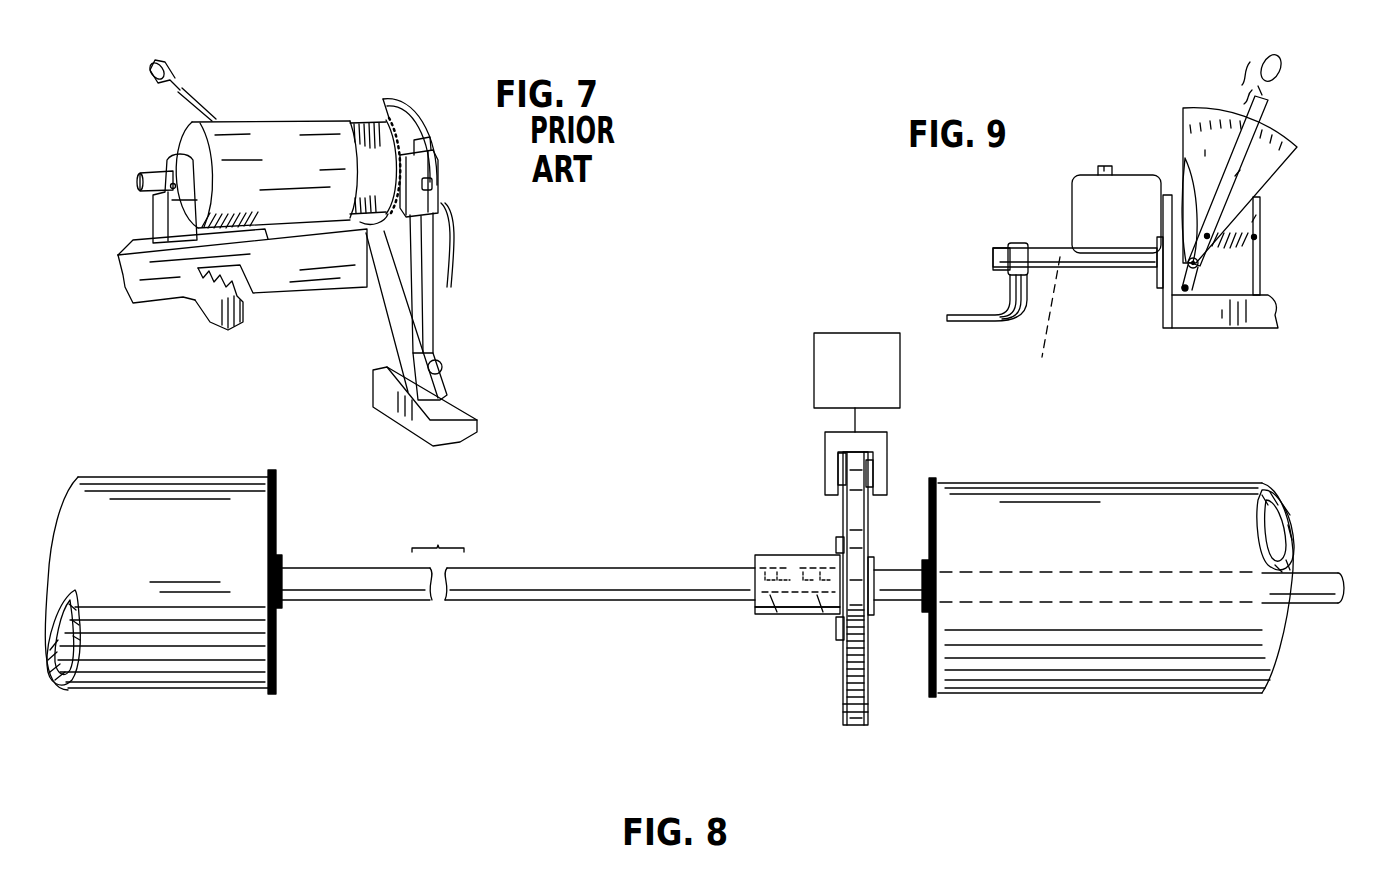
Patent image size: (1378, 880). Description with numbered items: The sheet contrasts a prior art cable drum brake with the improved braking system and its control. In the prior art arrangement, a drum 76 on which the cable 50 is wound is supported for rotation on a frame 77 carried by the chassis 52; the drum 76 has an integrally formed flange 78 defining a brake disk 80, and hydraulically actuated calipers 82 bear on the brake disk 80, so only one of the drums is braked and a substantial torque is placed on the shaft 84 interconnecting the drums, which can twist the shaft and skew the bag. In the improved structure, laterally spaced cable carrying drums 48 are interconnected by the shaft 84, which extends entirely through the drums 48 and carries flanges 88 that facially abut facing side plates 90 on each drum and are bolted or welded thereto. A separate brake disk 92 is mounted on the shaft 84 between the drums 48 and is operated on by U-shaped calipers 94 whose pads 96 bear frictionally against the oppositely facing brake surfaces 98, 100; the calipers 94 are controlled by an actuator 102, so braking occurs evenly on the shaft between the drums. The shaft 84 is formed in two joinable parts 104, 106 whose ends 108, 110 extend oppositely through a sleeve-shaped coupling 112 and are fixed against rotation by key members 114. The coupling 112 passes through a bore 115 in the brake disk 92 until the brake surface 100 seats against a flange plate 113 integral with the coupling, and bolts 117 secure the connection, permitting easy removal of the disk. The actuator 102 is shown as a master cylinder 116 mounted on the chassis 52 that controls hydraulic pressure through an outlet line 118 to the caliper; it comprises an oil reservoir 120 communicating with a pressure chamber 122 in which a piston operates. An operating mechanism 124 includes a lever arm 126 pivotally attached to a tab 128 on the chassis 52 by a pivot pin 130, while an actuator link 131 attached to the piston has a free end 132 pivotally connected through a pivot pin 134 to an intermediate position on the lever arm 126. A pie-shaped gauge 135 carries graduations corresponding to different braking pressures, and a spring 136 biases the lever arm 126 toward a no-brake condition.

In FIG. 8, the cable carrying drums 48 is at (155, 512).
In FIG. 7, the cable 50 is at (207, 118).
In FIG. 9, the chassis 52 is at (1260, 313).
In FIG. 7, the drum 76 is at (358, 140).
In FIG. 7, the frame 77 is at (345, 295).
In FIG. 7, the flange 78 is at (380, 110).
In FIG. 7, the brake disk 80 is at (403, 108).
In FIG. 7, the calipers 82 is at (352, 120).
In FIG. 7, the shaft 84 is at (147, 176).
In FIG. 8, the shaft 84 is at (548, 600).
In FIG. 8, the flanges 88 is at (280, 606).
In FIG. 8, the side plates 90 is at (272, 670).
In FIG. 8, the brake disk 92 is at (855, 727).
In FIG. 8, the U-shaped calipers 94 is at (884, 452).
In FIG. 8, the pads 96 is at (837, 458).
In FIG. 8, the brake surface 98 is at (868, 706).
In FIG. 8, the brake surface 100 is at (840, 658).
In FIG. 9, the actuator 102 is at (1138, 116).
In FIG. 8, the actuator 102 is at (874, 376).
In FIG. 8, the shaft part 104 is at (892, 583).
In FIG. 8, the shaft part 106 is at (483, 582).
In FIG. 8, the end of shaft part 108 is at (790, 618).
In FIG. 8, the end of shaft part 110 is at (760, 616).
In FIG. 8, the sleeve-shaped coupling 112 is at (762, 555).
In FIG. 8, the flange plate 113 is at (837, 630).
In FIG. 8, the key members 114 is at (828, 562).
In FIG. 8, the bore 115 is at (866, 624).
In FIG. 9, the master cylinder 116 is at (1123, 282).
In FIG. 8, the bolts 117 is at (837, 548).
In FIG. 9, the outlet line 118 is at (968, 315).
In FIG. 9, the oil reservoir 120 is at (1072, 205).
In FIG. 9, the pressure chamber 122 is at (1047, 319).
In FIG. 9, the operating mechanism 124 is at (1276, 231).
In FIG. 9, the lever arm 126 is at (1263, 102).
In FIG. 9, the tab 128 is at (1188, 291).
In FIG. 9, the pivot pin 130 is at (1180, 288).
In FIG. 9, the actuator link 131 is at (1192, 262).
In FIG. 9, the free end 132 is at (1187, 162).
In FIG. 9, the pivot pin 134 is at (1202, 267).
In FIG. 9, the pie-shaped gauge 135 is at (1262, 175).
In FIG. 9, the spring 136 is at (1230, 244).